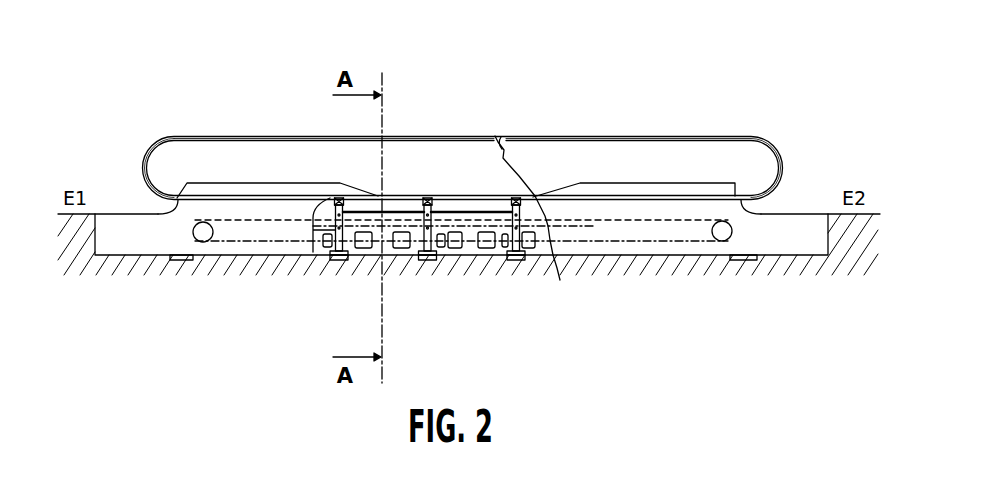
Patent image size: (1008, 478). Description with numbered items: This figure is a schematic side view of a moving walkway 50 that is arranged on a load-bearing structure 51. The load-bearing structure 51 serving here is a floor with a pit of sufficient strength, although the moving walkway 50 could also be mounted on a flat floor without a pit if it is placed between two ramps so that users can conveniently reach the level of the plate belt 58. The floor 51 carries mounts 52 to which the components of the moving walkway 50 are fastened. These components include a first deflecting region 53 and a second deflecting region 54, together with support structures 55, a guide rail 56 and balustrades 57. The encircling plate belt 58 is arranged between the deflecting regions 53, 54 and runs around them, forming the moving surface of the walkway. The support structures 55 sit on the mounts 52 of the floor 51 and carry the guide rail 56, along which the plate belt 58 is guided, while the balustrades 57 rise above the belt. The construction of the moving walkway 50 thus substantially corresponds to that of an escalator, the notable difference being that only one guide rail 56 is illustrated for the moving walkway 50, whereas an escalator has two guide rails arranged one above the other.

The moving walkway 50 is at (559, 130).
The load-bearing structure 51 is at (243, 258).
The mounts 52 is at (192, 258).
The first deflecting region 53 is at (195, 237).
The second deflecting region 54 is at (733, 236).
The support structures 55 is at (437, 238).
The guide rail 56 is at (467, 228).
The balustrades 57 is at (275, 152).
The plate belt 58 is at (660, 217).